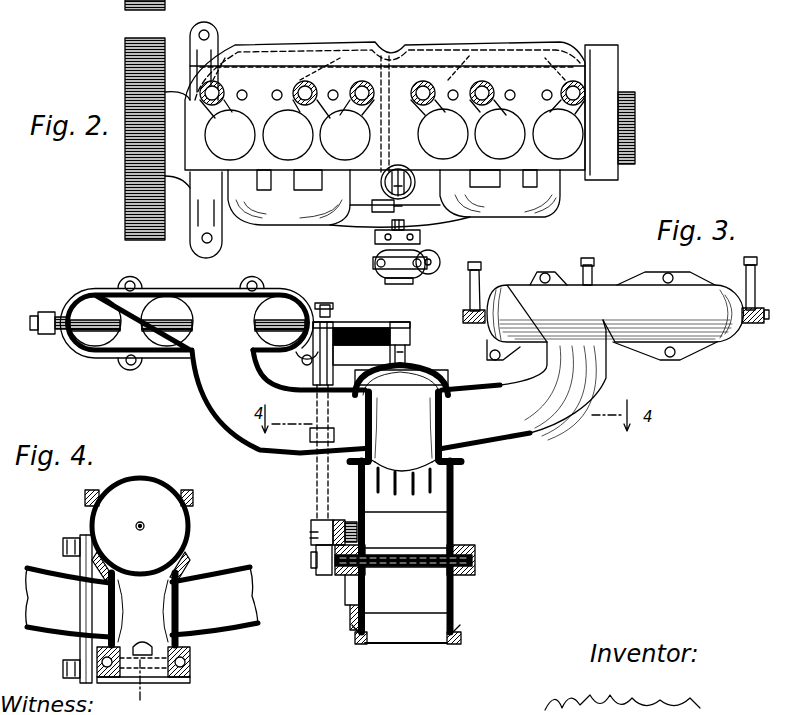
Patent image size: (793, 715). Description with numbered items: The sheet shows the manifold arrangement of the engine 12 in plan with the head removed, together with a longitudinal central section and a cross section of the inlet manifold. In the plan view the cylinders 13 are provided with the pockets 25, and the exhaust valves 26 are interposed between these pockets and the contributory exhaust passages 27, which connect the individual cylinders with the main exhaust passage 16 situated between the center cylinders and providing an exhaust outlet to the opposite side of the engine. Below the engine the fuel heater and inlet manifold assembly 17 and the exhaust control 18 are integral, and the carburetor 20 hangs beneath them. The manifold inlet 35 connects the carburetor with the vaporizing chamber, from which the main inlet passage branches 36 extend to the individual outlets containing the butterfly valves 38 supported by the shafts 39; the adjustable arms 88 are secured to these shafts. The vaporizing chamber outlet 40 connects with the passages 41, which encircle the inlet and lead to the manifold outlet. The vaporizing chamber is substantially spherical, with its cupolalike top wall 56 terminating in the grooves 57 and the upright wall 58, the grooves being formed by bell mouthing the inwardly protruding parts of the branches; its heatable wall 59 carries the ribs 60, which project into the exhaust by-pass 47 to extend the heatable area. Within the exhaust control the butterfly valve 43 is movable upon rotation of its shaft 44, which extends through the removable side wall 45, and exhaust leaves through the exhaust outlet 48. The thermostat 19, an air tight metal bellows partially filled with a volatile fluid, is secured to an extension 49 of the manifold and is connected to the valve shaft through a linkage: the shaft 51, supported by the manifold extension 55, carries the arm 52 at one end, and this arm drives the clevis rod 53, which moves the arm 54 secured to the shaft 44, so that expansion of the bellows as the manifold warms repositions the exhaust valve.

In FIG. 2, the engine 12 is at (530, 68).
In FIG. 2, the cylinders 13 is at (242, 157).
In FIG. 2, the main exhaust passage 16 is at (376, 135).
In FIG. 2, the fuel heater and inlet manifold assembly 17 is at (383, 238).
In FIG. 3, the fuel heater and inlet manifold assembly 17 is at (454, 456).
In FIG. 3, the exhaust control 18 is at (455, 596).
In FIG. 2, the thermostat 19 is at (416, 183).
In FIG. 2, the carburetor 20 is at (424, 278).
In FIG. 2, the pockets 25 is at (232, 106).
In FIG. 2, the exhaust valves 26 is at (226, 90).
In FIG. 2, the contributory exhaust passages 27 is at (222, 92).
In FIG. 4, the manifold inlet 35 is at (160, 681).
In FIG. 2, the main inlet passage branches 36 is at (284, 208).
In FIG. 3, the main inlet passage branches 36 is at (530, 420).
In FIG. 4, the main inlet passage branches 36 is at (142, 602).
In FIG. 3, the butterfly valves 38 is at (187, 321).
In FIG. 3, the shafts 39 is at (762, 348).
In FIG. 4, the vaporizing chamber outlet 40 is at (142, 643).
In FIG. 4, the passages 41 is at (191, 667).
In FIG. 3, the butterfly valve 43 is at (406, 566).
In FIG. 3, the shaft 44 is at (404, 567).
In FIG. 3, the removable side wall 45 is at (352, 627).
In FIG. 4, the removable side wall 45 is at (92, 686).
In FIG. 3, the by-pass 47 is at (406, 503).
In FIG. 3, the exhaust outlet 48 is at (406, 629).
In FIG. 4, the extension 49 is at (139, 526).
In FIG. 3, the shaft 51 is at (407, 329).
In FIG. 3, the arm 52 is at (320, 334).
In FIG. 3, the clevis rod 53 is at (317, 487).
In FIG. 3, the arm 54 is at (327, 575).
In FIG. 3, the manifold extension 55 is at (361, 343).
In FIG. 3, the cupolalike top wall 56 is at (401, 374).
In FIG. 3, the grooves 57 is at (432, 398).
In FIG. 4, the grooves 57 is at (115, 585).
In FIG. 3, the upright wall 58 is at (447, 428).
In FIG. 4, the upright wall 58 is at (141, 598).
In FIG. 3, the heatable wall 59 is at (403, 458).
In FIG. 3, the ribs 60 is at (422, 492).
In FIG. 3, the adjustable arms 88 is at (47, 336).